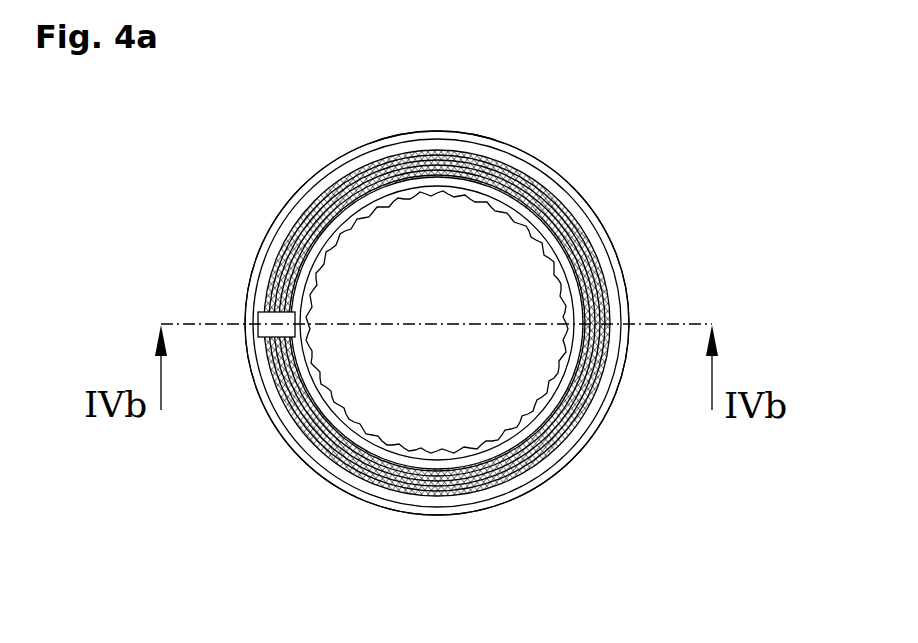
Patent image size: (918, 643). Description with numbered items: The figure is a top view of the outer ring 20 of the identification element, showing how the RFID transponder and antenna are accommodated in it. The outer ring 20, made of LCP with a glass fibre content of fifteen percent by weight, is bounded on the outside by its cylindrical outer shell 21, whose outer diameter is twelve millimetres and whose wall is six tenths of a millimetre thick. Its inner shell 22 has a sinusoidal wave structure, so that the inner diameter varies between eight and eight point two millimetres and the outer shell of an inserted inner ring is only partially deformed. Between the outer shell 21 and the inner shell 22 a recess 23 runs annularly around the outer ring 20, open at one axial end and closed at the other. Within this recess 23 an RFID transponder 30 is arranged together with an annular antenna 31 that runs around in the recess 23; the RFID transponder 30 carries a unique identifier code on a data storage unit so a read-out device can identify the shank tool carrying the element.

The outer ring 20 is at (672, 213).
The outer shell 21 is at (350, 152).
The inner shell 22 is at (508, 432).
The recess 23 is at (513, 168).
The RFID transponder 30 is at (258, 316).
The annular antenna 31 is at (285, 407).